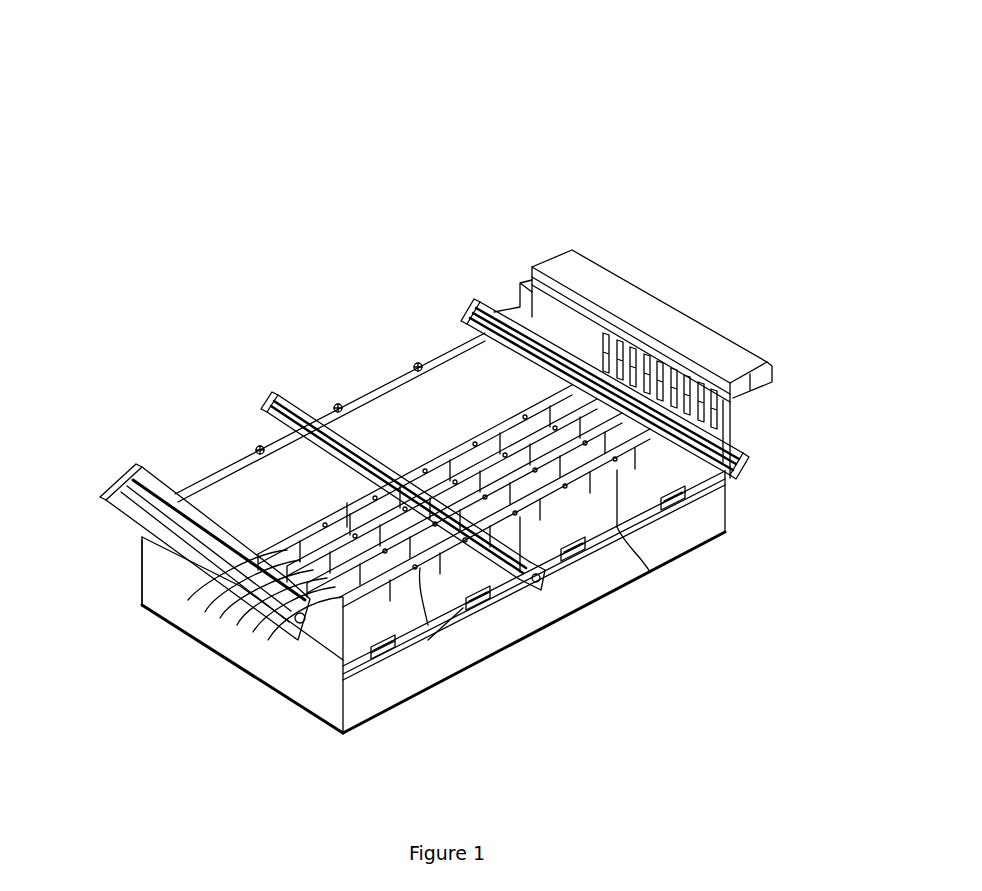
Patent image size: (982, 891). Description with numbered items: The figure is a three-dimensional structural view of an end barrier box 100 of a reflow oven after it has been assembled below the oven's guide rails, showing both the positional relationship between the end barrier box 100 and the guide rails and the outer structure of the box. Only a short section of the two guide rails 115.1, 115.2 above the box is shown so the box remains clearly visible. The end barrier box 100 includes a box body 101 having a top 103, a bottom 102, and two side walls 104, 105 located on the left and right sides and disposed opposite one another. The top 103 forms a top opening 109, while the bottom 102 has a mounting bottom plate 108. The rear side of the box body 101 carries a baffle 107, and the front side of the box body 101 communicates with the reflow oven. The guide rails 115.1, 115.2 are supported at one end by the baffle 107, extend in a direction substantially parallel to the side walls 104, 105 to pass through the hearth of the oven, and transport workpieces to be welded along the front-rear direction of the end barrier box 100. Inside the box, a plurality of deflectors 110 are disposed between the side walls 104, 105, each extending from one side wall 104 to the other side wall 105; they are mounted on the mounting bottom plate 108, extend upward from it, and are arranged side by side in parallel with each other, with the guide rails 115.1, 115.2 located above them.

The end barrier box 100 is at (578, 170).
The box body 101 is at (627, 290).
The bottom 102 is at (343, 734).
The top 103 is at (522, 378).
The side wall 104 is at (172, 594).
The side wall 105 is at (720, 428).
The baffle 107 is at (237, 508).
The mounting bottom plate 108 is at (636, 533).
The top opening 109 is at (413, 403).
The deflectors 110 is at (188, 600).
The guide rail 115.1 is at (298, 403).
The guide rail 115.2 is at (492, 292).